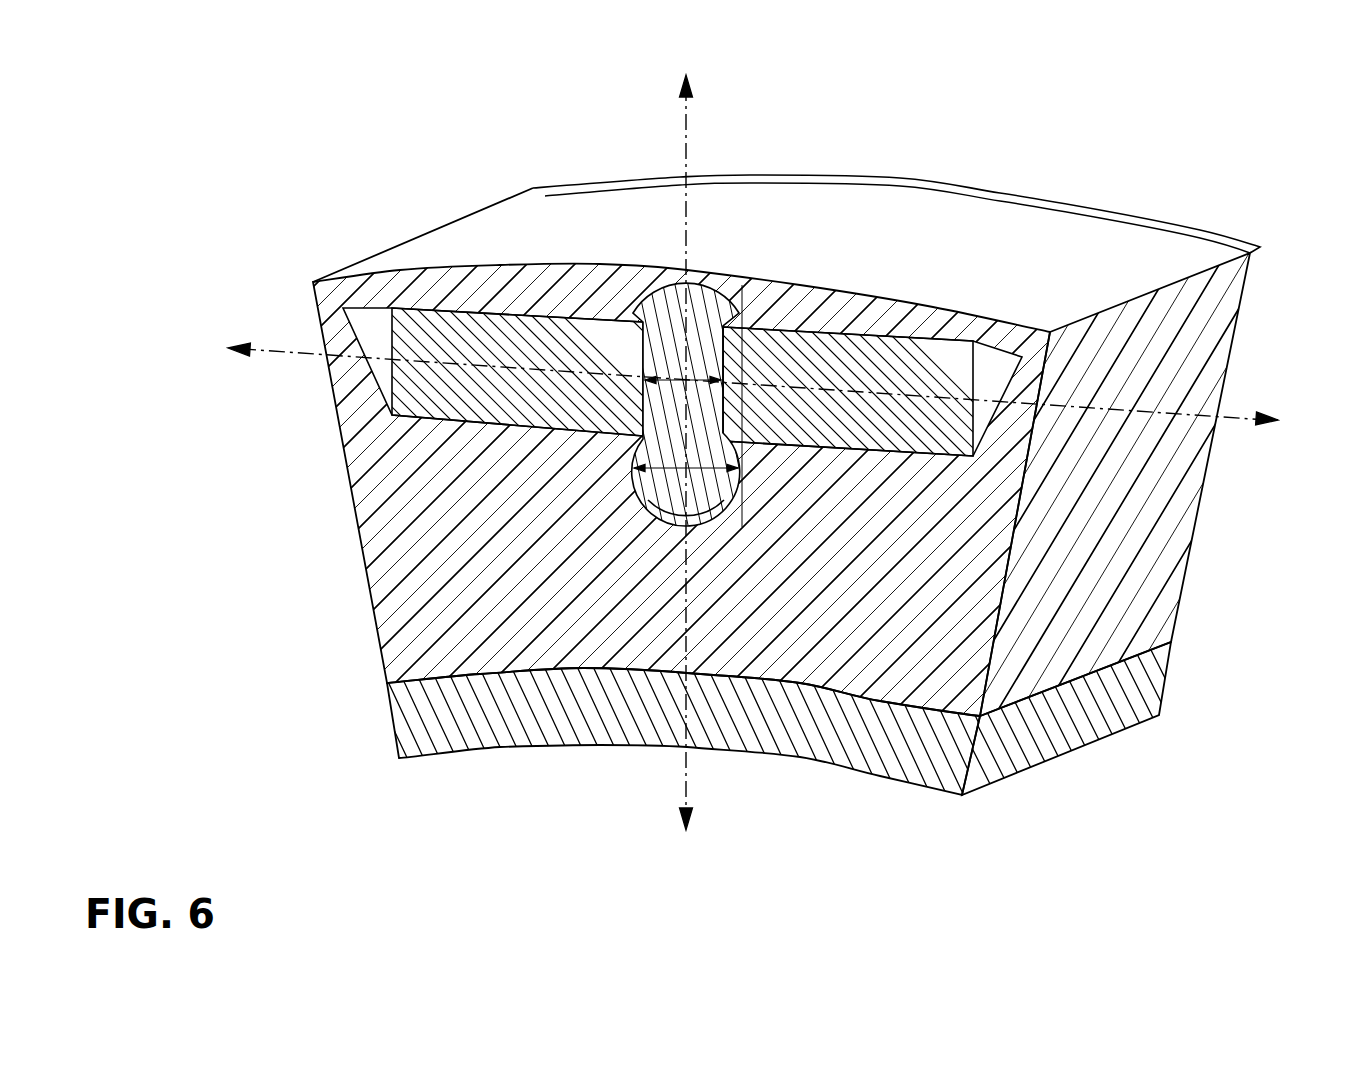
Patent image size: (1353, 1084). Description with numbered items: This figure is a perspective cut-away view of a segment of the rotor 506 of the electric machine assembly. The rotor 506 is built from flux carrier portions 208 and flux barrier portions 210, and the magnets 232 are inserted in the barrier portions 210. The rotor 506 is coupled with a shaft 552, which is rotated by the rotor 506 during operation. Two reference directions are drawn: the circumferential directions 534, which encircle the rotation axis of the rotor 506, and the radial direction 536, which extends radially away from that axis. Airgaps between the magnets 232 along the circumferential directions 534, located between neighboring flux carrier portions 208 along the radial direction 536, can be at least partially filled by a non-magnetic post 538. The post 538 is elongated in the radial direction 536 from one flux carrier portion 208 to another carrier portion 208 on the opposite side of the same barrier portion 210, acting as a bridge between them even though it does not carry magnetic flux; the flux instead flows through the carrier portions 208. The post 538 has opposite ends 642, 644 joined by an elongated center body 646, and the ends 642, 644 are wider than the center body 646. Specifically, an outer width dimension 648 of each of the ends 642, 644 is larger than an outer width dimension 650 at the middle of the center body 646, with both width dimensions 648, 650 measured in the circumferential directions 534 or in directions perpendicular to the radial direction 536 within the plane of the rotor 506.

The rotor 506 is at (1177, 188).
The flux carrier portion 208 is at (513, 287).
The flux barrier portion 210 is at (563, 313).
The magnet 232 is at (467, 397).
The circumferential direction 534 is at (266, 357).
The radial direction 536 is at (692, 165).
The non-magnetic post 538 is at (707, 290).
The shaft 552 is at (1085, 742).
The end of post 642 is at (744, 308).
The end of post 644 is at (745, 481).
The elongated center body 646 is at (745, 357).
The outer width dimension of end 648 is at (693, 524).
The outer width dimension of center body 650 is at (653, 434).